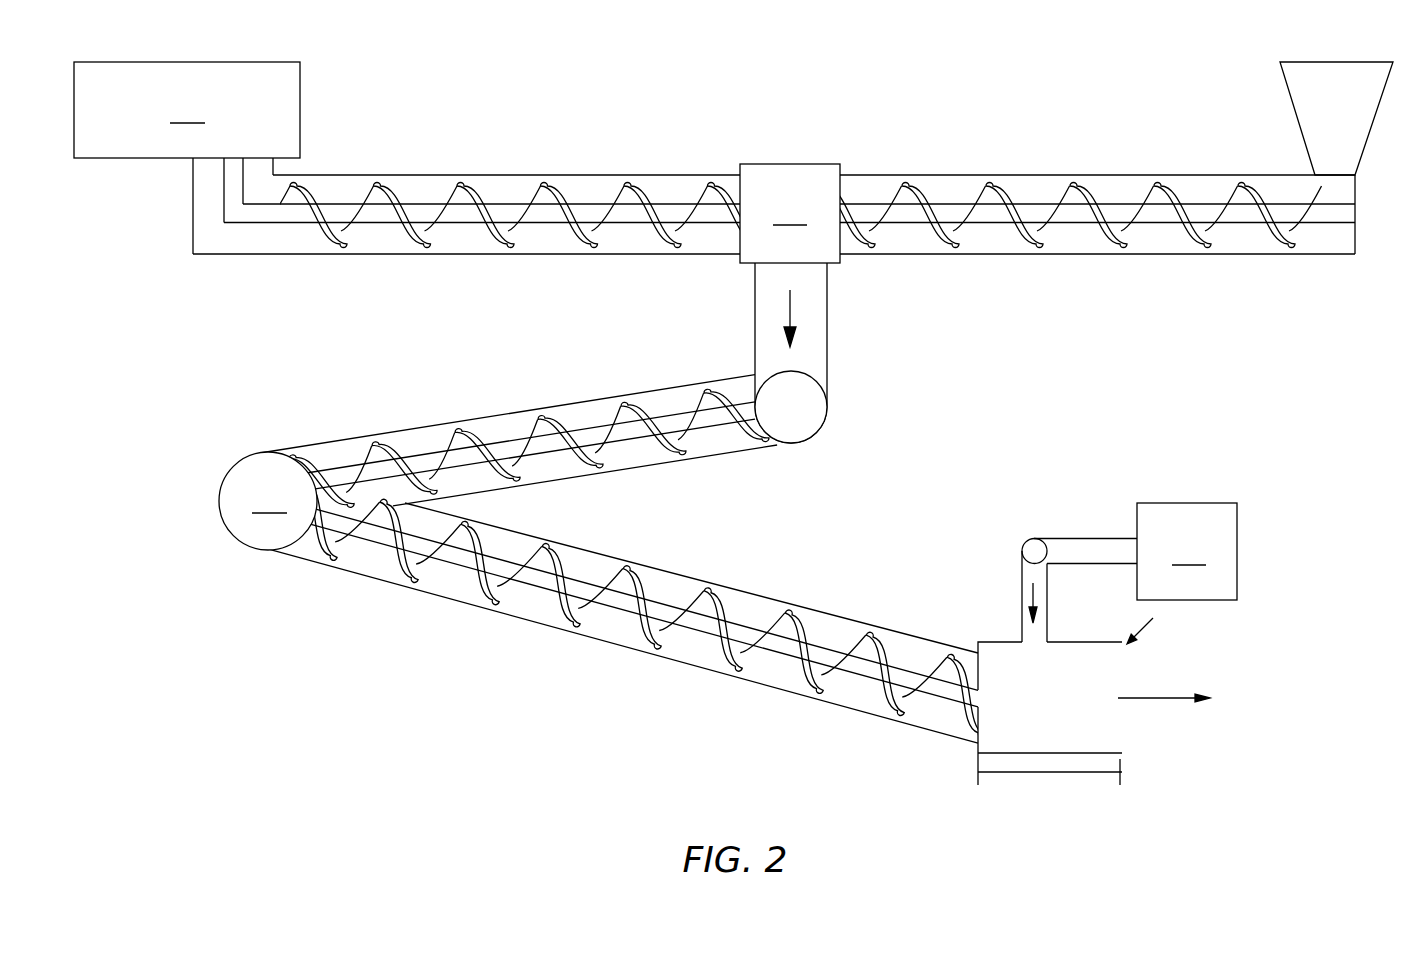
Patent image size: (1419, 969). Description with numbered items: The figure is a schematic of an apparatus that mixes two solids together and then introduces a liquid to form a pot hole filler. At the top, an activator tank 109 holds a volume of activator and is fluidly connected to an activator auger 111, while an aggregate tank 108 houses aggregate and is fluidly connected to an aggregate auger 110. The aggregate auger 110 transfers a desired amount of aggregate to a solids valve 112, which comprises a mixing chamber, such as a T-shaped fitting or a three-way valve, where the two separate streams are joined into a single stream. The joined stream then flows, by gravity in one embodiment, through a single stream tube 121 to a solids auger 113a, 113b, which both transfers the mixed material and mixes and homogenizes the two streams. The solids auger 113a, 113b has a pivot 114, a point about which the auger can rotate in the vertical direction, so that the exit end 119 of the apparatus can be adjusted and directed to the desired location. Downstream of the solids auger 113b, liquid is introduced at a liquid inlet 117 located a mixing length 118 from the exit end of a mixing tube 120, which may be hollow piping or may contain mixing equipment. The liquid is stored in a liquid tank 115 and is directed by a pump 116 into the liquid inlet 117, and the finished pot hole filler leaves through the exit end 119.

The aggregate tank 108 is at (1332, 62).
The activator tank 109 is at (187, 110).
The aggregate auger 110 is at (1148, 175).
The activator auger 111 is at (533, 175).
The solids valve 112 is at (790, 213).
The solids auger 113a is at (533, 410).
The solids auger 113b is at (498, 608).
The pivot 114 is at (268, 501).
The liquid tank 115 is at (1187, 551).
The pump 116 is at (1025, 542).
The liquid inlet 117 is at (1022, 577).
The mixing length 118 is at (1053, 772).
The exit end 119 is at (1153, 618).
The mixing tube 120 is at (1000, 641).
The single stream tube 121 is at (827, 338).